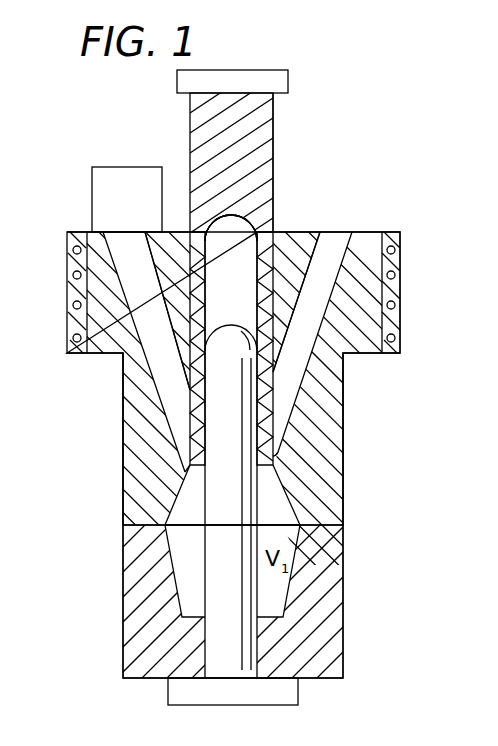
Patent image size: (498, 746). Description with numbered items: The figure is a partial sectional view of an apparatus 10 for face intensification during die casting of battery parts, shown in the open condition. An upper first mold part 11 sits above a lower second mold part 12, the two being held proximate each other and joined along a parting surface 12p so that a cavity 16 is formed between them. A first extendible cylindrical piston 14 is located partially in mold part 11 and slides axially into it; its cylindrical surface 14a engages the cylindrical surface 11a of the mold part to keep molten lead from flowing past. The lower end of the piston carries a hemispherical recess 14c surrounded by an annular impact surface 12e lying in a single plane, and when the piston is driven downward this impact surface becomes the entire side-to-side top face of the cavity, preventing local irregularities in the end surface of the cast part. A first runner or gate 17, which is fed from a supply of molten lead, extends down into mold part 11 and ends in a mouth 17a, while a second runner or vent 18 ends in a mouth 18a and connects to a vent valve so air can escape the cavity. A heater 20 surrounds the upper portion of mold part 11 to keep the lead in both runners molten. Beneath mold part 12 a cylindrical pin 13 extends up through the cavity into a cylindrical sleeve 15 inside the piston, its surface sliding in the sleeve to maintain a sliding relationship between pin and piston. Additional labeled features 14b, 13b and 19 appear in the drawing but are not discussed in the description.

The apparatus 10 is at (380, 145).
The upper first mold part 11 is at (340, 422).
The cylindrical surface 11a is at (190, 389).
The lower second mold part 12 is at (338, 623).
The annular impact surface 12e is at (277, 382).
The parting surface 12p is at (340, 524).
The cylindrical pin 13 is at (218, 580).
The plunger base 13b is at (170, 692).
The first extendible cylindrical piston 14 is at (205, 135).
The cylindrical surface 14a is at (275, 133).
The stem head 14b is at (289, 76).
The hemispherical recess 14c is at (262, 218).
The cylindrical sleeve 15 is at (283, 232).
The cavity 16 is at (302, 528).
The first runner 17 is at (349, 233).
The mouth 17a is at (290, 455).
The second runner 18 is at (145, 325).
The mouth 18a is at (192, 432).
The connector block 19 is at (128, 167).
The heater 20 is at (394, 285).